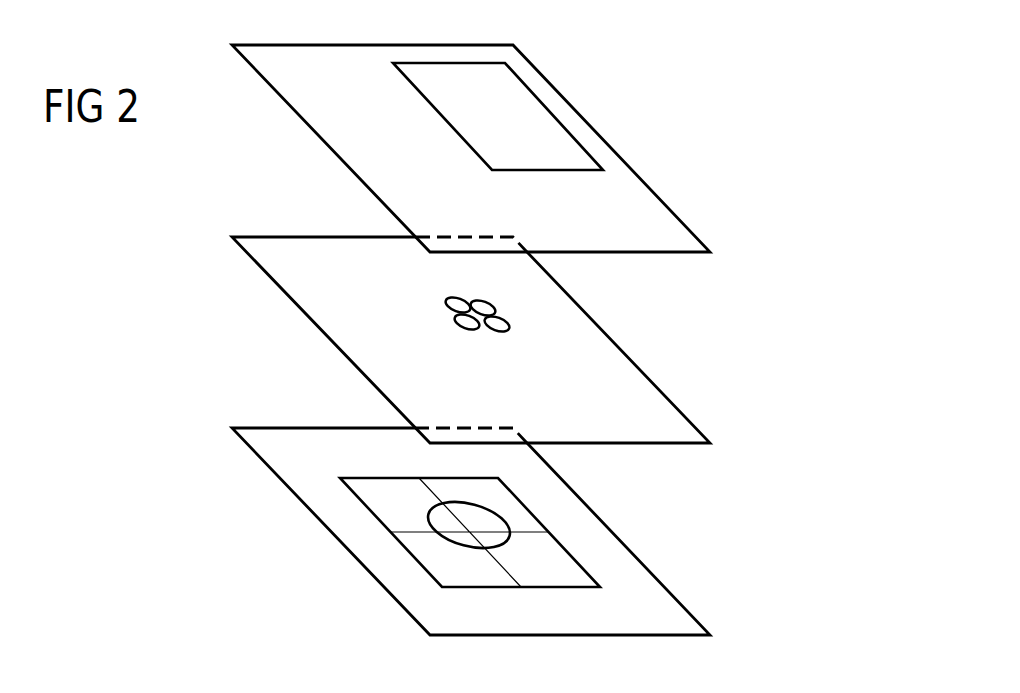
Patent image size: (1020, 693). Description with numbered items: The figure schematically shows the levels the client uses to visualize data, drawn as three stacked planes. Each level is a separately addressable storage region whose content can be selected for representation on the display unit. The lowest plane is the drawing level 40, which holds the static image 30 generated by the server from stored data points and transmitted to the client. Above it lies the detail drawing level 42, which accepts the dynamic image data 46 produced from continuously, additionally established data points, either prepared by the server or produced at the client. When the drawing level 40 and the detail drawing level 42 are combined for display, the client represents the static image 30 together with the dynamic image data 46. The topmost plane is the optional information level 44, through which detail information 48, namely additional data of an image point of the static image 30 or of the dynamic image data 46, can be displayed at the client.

The image 30 is at (558, 538).
The drawing level 40 is at (645, 568).
The detail drawing level 42 is at (658, 390).
The information level 44 is at (632, 168).
The dynamic image data 46 is at (507, 328).
The detail information 48 is at (556, 117).